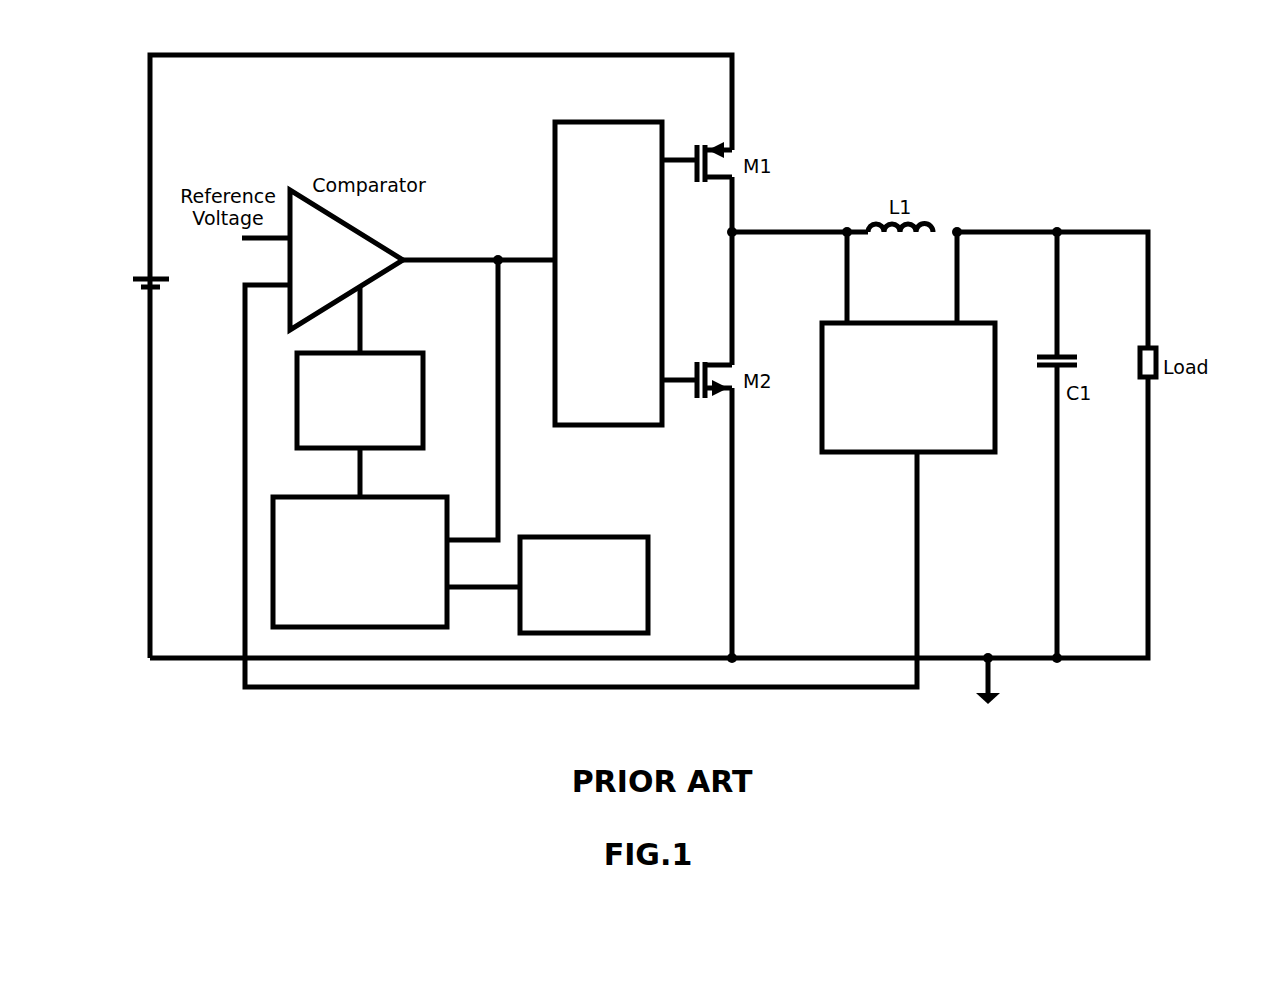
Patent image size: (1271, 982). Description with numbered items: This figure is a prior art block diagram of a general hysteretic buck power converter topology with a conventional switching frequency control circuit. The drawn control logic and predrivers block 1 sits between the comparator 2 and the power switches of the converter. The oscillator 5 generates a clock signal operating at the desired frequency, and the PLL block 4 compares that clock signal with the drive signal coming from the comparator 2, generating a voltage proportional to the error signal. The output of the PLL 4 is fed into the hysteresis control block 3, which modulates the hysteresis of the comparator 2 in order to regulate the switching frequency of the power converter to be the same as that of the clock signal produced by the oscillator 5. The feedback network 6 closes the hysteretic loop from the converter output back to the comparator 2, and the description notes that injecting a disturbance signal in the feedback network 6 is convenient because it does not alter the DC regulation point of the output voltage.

The control logic and predrivers 1 is at (580, 121).
The comparator 2 is at (378, 237).
The hysteresis control block 3 is at (297, 400).
The PLL block 4 is at (273, 547).
The oscillator 5 is at (585, 536).
The feedback network 6 is at (878, 453).